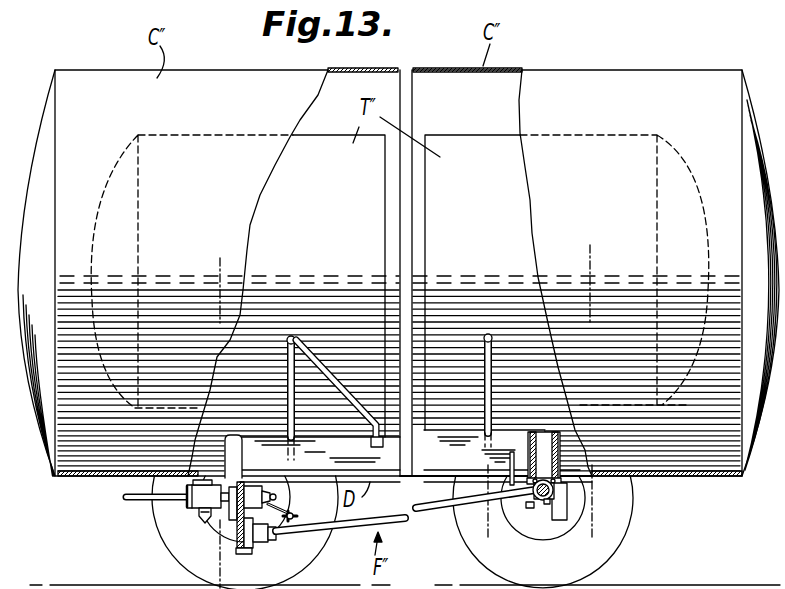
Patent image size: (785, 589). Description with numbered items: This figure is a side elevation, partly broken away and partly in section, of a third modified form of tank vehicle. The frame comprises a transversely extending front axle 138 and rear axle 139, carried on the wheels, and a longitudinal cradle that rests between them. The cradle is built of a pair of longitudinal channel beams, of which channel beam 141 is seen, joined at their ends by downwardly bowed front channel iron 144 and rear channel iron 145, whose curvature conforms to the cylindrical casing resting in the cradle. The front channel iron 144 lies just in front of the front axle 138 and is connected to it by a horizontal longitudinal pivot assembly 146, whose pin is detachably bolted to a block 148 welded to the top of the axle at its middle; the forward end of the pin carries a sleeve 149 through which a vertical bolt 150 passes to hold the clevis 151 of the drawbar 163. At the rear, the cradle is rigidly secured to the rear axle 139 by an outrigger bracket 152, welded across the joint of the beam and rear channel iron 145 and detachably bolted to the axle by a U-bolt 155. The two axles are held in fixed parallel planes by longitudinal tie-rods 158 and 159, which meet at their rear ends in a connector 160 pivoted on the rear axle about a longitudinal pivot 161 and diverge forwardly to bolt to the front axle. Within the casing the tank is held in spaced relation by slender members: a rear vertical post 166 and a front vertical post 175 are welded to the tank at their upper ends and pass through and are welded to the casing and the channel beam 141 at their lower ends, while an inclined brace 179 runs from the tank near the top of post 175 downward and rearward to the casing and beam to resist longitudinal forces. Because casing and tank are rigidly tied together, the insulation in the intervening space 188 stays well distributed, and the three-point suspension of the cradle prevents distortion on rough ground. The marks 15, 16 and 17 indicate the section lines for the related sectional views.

The section line 15 is at (218, 276).
The section line 16 is at (592, 262).
The section line 17 is at (490, 368).
The front axle 138 is at (253, 543).
The rear axle 139 is at (553, 490).
The channel beam 141 is at (435, 463).
The front channel iron 144 is at (233, 437).
The rear channel iron 145 is at (567, 503).
The pivot assembly 146 is at (224, 516).
The block 148 is at (250, 487).
The sleeve 149 is at (196, 488).
The vertical bolt 150 is at (205, 526).
The clevis 151 is at (189, 508).
The outrigger bracket 152 is at (550, 437).
The U-bolt 155 is at (547, 504).
The tie-rod 158 is at (427, 508).
The tie-rod 159 is at (311, 533).
The connector 160 is at (530, 508).
The longitudinal pivot 161 is at (511, 466).
The drawbar 163 is at (140, 503).
The vertical post 166 is at (485, 418).
The vertical post 175 is at (287, 420).
The inclined brace 179 is at (339, 393).
The intervening space 188 is at (440, 92).